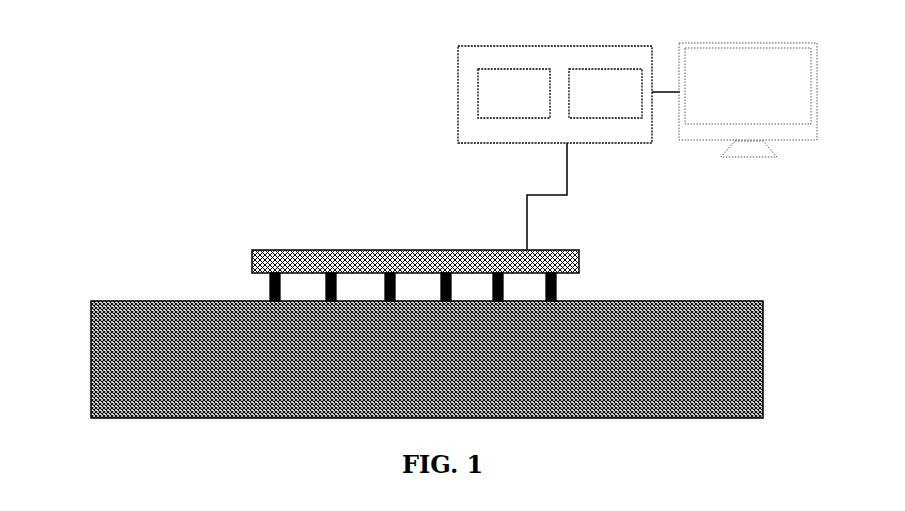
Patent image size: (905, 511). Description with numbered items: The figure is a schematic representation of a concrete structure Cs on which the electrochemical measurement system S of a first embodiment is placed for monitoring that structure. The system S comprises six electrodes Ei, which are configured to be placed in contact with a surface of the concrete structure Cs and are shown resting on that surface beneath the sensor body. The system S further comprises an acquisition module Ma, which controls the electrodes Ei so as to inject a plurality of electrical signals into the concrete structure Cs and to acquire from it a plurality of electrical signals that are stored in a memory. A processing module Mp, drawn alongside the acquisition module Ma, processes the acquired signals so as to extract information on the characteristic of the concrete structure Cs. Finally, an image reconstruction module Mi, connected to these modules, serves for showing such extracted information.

The concrete structure Cs is at (79, 316).
The electrodes Ei is at (268, 290).
The electrochemical measurement system S is at (593, 251).
The acquisition module Ma is at (514, 93).
The processing module Mp is at (605, 93).
The image reconstruction module Mi is at (748, 100).